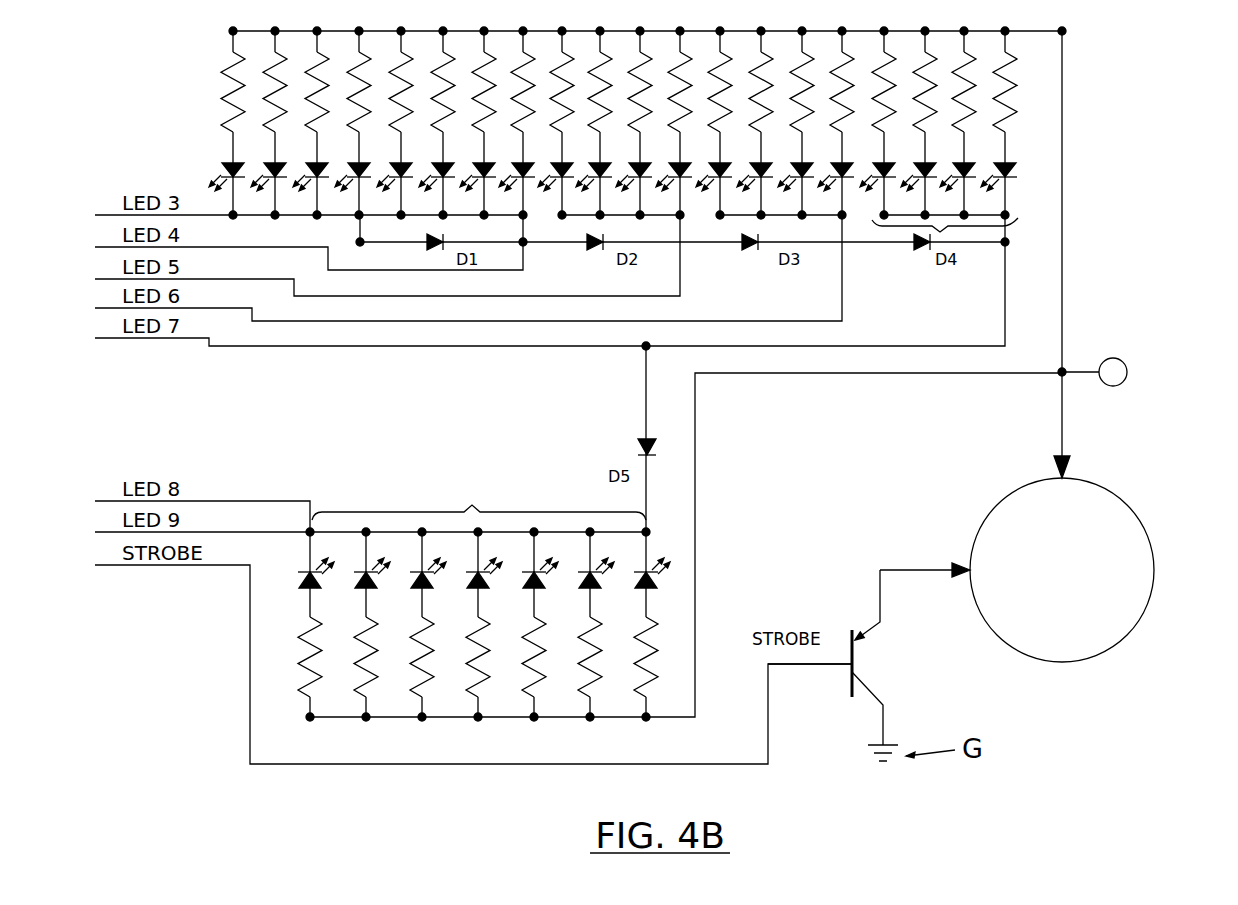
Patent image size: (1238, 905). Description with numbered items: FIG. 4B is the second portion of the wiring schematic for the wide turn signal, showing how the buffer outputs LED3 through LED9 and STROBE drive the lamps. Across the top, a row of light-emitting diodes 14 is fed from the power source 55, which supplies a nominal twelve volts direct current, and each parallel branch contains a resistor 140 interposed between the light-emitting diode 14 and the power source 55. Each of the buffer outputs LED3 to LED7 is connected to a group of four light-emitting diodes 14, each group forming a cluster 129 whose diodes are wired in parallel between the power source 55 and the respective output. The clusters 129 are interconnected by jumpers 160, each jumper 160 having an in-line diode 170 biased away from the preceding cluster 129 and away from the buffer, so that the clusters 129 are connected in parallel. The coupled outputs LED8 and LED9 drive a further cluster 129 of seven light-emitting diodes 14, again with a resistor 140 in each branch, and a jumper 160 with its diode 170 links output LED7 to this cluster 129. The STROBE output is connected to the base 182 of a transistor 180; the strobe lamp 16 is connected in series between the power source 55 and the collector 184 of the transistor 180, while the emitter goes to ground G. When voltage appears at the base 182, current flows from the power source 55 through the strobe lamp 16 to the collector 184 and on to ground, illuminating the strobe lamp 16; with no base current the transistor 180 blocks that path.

The light-emitting diode 14 is at (212, 172).
The resistor 140 is at (222, 110).
The power source 55 is at (1062, 133).
The cluster 129 is at (940, 231).
The jumper 160 is at (413, 249).
The diode 170 is at (435, 254).
The strobe lamp 16 is at (1148, 533).
The transistor 180 is at (866, 667).
The base 182 is at (848, 680).
The collector 184 is at (866, 646).